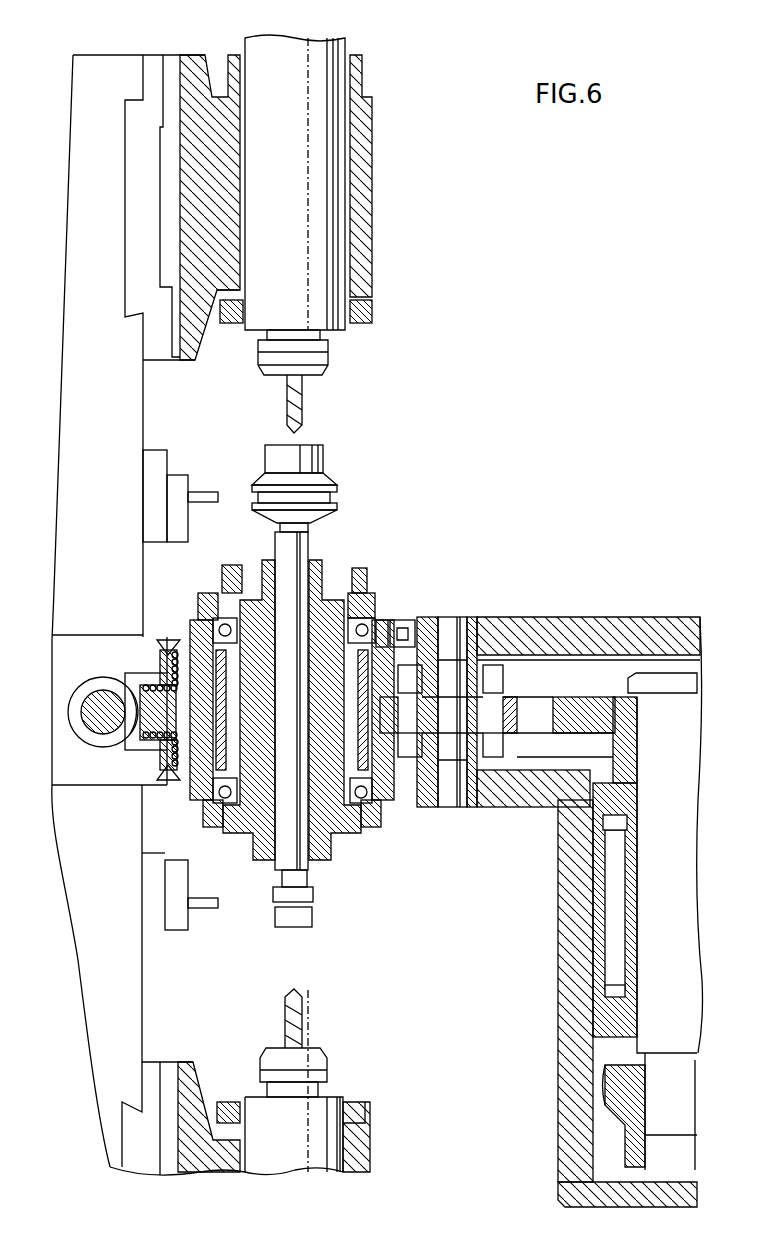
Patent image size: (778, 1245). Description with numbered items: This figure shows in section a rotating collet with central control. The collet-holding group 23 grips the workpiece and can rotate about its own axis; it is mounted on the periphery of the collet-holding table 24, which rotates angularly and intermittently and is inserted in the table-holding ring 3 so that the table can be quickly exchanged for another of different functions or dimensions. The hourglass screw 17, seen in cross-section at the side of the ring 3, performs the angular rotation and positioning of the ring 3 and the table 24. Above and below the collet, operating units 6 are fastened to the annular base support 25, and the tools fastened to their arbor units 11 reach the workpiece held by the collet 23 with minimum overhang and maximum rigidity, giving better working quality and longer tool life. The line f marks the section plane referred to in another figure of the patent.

The table-holding ring 3 is at (190, 645).
The operating unit 6 is at (193, 55).
The arbor unit 11 is at (295, 1152).
The hourglass screw 17 is at (82, 708).
The collet-holding group 23 is at (380, 607).
The collet-holding table 24 is at (612, 617).
The table 25 is at (130, 237).
The plane f (FIG.5) f is at (185, 798).